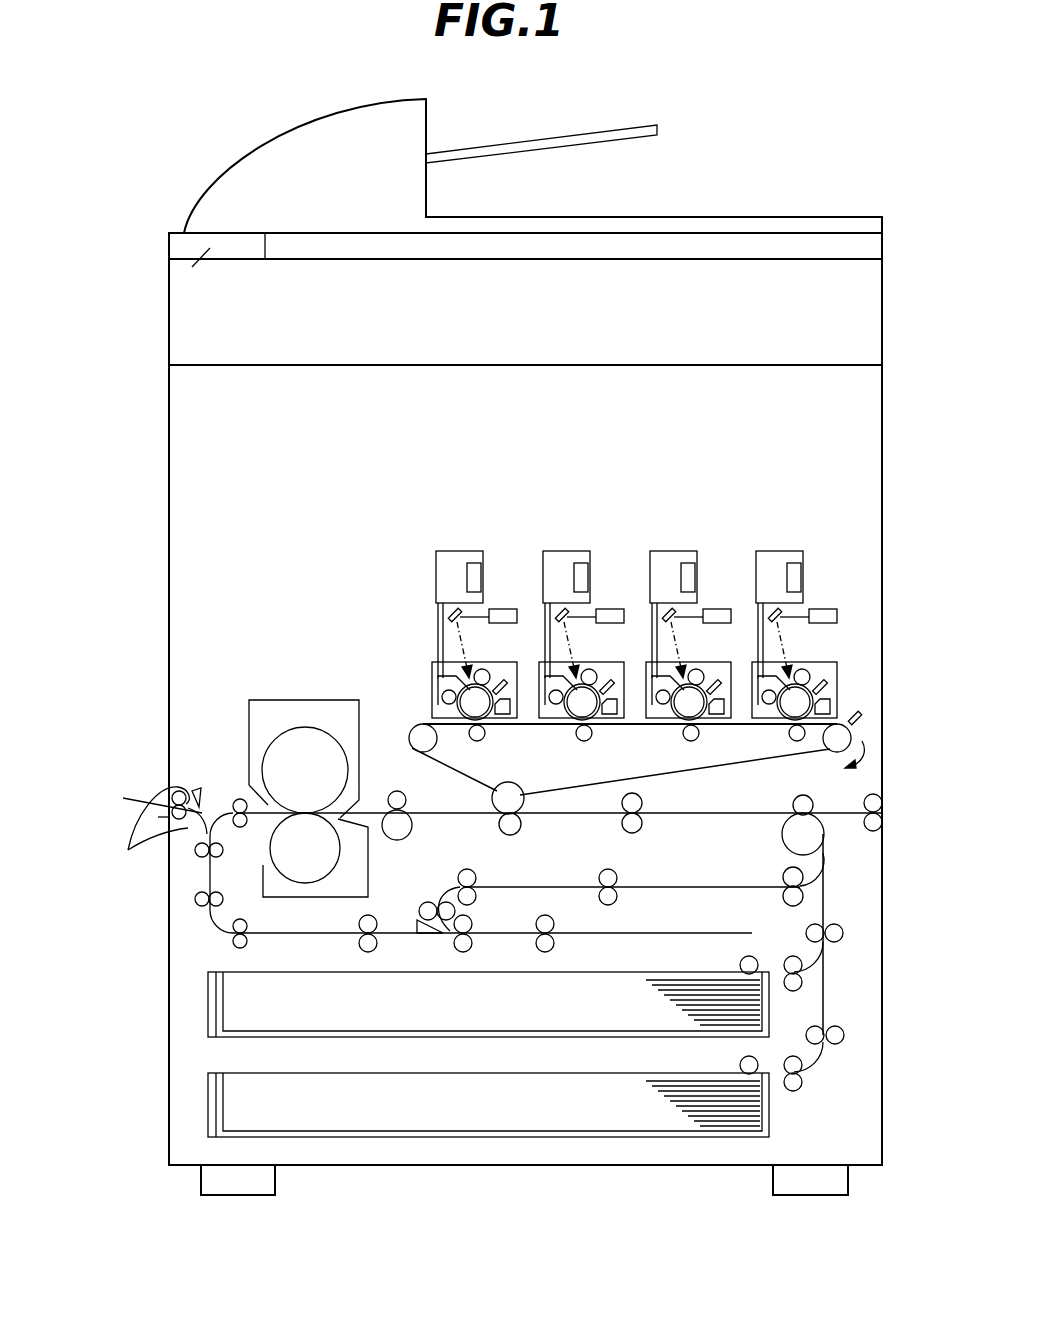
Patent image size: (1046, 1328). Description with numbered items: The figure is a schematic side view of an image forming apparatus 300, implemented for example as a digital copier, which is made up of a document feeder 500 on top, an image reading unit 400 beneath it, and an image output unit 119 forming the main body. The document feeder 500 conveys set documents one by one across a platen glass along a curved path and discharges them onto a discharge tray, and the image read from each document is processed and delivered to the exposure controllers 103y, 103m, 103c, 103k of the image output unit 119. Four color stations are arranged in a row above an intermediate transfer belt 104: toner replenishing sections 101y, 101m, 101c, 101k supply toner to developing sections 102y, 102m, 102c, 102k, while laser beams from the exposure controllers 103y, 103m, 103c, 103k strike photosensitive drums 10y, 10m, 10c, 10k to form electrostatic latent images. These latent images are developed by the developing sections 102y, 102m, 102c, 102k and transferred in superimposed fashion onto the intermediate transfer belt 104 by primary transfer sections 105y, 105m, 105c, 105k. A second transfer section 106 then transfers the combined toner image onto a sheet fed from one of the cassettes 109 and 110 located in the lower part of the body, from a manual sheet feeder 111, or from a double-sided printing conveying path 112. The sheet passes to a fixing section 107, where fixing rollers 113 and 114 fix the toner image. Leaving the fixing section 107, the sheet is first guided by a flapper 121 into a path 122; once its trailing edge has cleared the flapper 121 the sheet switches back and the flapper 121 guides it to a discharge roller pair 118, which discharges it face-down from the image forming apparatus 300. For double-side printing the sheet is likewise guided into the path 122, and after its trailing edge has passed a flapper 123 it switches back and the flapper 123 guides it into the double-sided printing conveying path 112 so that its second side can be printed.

The image forming apparatus 300 is at (125, 308).
The image reading unit 400 is at (882, 310).
The document feeder 500 is at (882, 243).
The image output unit 119 is at (882, 540).
The toner replenishing section 101y is at (443, 551).
The toner replenishing section 101m is at (550, 551).
The toner replenishing section 101c is at (657, 551).
The toner replenishing section 101k is at (770, 551).
The developing section 102y is at (519, 688).
The developing section 102m is at (626, 688).
The developing section 102c is at (733, 688).
The developing section 102k is at (839, 688).
The exposure controller 103y is at (510, 609).
The exposure controller 103m is at (617, 609).
The exposure controller 103c is at (724, 609).
The exposure controller 103k is at (833, 609).
The photosensitive drum 10y is at (499, 668).
The photosensitive drum 10m is at (606, 668).
The photosensitive drum 10c is at (713, 668).
The photosensitive drum 10k is at (819, 668).
The primary transfer section 105y is at (486, 736).
The primary transfer section 105m is at (593, 736).
The primary transfer section 105c is at (700, 736).
The primary transfer section 105k is at (796, 745).
The intermediate transfer belt 104 is at (689, 782).
The second transfer section 106 is at (520, 830).
The fixing section 107 is at (259, 686).
The fixing roller 113 is at (320, 727).
The fixing roller 114 is at (325, 843).
The manual sheet feeder 111 is at (885, 810).
The double-sided printing conveying path 112 is at (705, 886).
The flapper 123 is at (417, 922).
The path 122 is at (212, 876).
The flapper 121 is at (197, 786).
The discharge roller pair 118 is at (143, 837).
The cassette 110 is at (240, 1017).
The cassette 109 is at (240, 1112).